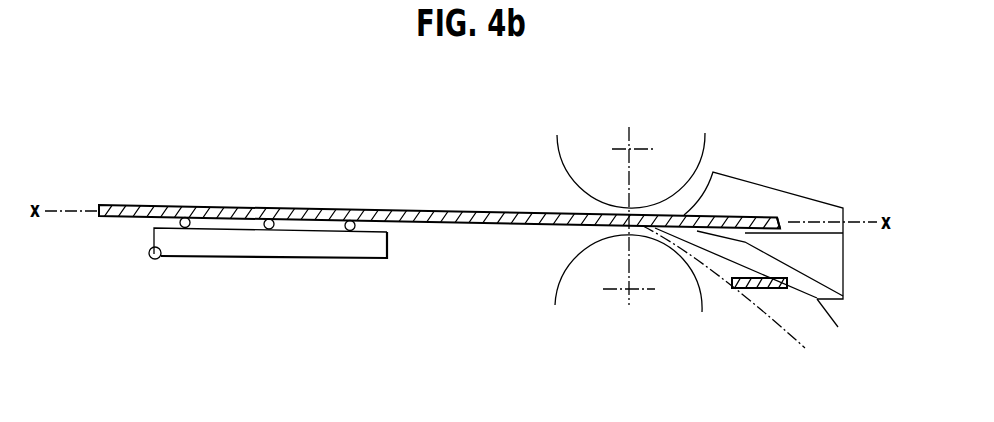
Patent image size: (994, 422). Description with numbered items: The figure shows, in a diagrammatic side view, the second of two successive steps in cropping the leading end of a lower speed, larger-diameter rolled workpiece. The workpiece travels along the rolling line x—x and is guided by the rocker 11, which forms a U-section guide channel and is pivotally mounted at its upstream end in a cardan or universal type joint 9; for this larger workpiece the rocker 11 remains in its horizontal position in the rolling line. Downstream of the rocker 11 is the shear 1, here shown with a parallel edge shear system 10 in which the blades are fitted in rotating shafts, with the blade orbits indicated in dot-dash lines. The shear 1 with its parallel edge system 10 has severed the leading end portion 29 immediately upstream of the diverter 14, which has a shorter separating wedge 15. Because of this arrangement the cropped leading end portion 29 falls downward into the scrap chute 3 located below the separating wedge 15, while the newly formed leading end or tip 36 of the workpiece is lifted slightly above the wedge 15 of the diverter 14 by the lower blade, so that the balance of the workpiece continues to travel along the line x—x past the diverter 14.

The shear 1 is at (653, 193).
The scrap chute 3 is at (814, 333).
The cardan or universal type joint 9 is at (151, 259).
The parallel edge shear system 10 is at (577, 157).
The rocker 11 is at (308, 247).
The diverter 14 is at (742, 192).
The separating wedge 15 is at (820, 256).
The leading end portion 29 is at (762, 290).
The leading end or tip 36 is at (795, 212).